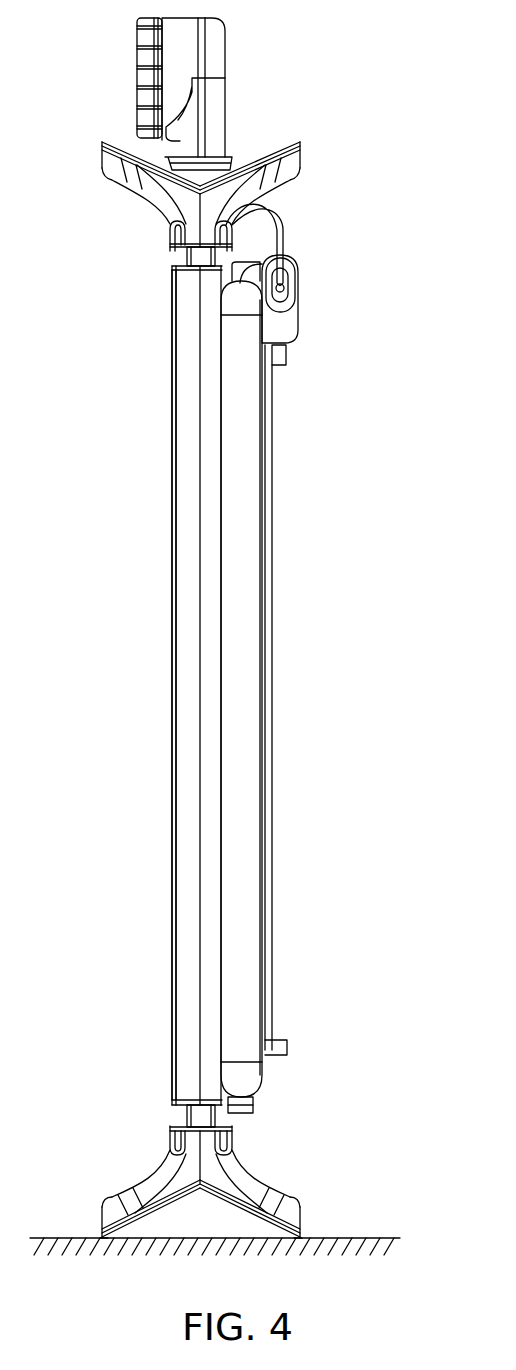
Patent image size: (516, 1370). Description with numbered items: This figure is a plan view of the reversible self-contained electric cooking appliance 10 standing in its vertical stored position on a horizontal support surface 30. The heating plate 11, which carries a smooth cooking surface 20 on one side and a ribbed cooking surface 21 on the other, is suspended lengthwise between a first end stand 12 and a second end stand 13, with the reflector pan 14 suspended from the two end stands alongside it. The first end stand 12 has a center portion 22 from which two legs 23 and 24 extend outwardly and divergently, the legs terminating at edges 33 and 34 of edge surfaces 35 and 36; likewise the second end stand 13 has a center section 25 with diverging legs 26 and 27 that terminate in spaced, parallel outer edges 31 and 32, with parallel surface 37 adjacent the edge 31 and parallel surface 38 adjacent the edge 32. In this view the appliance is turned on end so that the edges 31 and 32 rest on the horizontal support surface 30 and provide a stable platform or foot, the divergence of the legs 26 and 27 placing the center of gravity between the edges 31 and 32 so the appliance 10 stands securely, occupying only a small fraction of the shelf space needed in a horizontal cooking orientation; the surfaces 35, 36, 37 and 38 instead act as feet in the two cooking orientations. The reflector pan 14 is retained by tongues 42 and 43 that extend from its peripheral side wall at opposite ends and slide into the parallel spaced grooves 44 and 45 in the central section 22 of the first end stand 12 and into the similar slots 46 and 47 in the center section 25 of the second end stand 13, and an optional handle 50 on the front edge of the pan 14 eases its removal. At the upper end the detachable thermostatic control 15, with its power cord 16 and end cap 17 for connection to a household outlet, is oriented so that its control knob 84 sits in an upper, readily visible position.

The cooking appliance 10 is at (357, 567).
The heating plate 11 is at (172, 575).
The first end stand 12 is at (168, 228).
The second end stand 13 is at (157, 1160).
The reflector pan 14 is at (270, 605).
The detachable thermostatic control 15 is at (225, 62).
The power cord 16 is at (283, 232).
The end cap 17 is at (298, 320).
The smooth cooking surface 20 is at (255, 1105).
The ribbed cooking surface 21 is at (172, 483).
The center portion 22 is at (190, 207).
The leg 23 is at (290, 162).
The leg 24 is at (120, 167).
The center section 25 is at (220, 1165).
The leg 26 is at (280, 1205).
The leg 27 is at (117, 1198).
The horizontal support surface 30 is at (378, 1238).
The outer edge 31 is at (297, 1240).
The outer edge 32 is at (105, 1240).
The edge 33 is at (300, 142).
The edge 34 is at (102, 145).
The edge surface 35 is at (303, 152).
The edge surface 36 is at (102, 155).
The parallel surface 37 is at (300, 1220).
The parallel surface 38 is at (102, 1222).
The tongue 42 is at (232, 254).
The tongue 43 is at (228, 1122).
The groove 44 is at (230, 218).
The groove 45 is at (178, 246).
The slot 46 is at (228, 1140).
The slot 47 is at (172, 1130).
The handle 50 is at (240, 487).
The control knob 84 is at (137, 40).